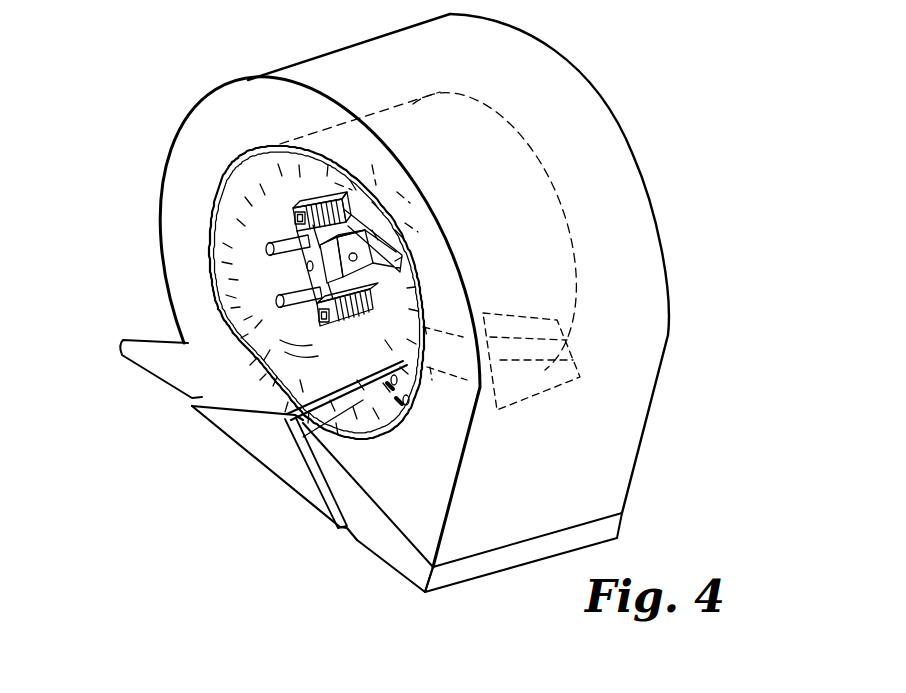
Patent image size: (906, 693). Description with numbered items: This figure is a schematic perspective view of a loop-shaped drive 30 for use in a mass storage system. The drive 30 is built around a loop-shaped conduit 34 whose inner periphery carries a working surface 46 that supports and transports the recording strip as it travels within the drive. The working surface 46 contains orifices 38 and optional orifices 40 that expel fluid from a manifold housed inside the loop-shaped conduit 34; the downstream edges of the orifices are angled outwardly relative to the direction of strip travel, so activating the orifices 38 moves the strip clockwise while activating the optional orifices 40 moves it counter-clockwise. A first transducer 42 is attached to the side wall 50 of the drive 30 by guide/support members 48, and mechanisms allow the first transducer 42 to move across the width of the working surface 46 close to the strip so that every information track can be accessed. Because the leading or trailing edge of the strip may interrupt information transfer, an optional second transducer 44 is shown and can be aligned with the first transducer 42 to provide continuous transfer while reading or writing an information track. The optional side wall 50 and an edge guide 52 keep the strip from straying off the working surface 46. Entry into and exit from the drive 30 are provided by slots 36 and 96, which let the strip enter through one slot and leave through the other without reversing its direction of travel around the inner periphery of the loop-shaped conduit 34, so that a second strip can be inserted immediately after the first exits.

The loop-shaped drive 30 is at (632, 76).
The loop-shaped conduit 34 is at (204, 124).
The slot 36 is at (332, 518).
The orifices 38 is at (258, 340).
The optional orifices 40 is at (290, 350).
The first transducer 42 is at (270, 210).
The second transducer 44 is at (303, 437).
The working surface 46 is at (186, 324).
The guide/support members 48 is at (280, 302).
The side wall 50 is at (520, 213).
The edge guide 52 is at (208, 233).
The slot 96 is at (220, 408).